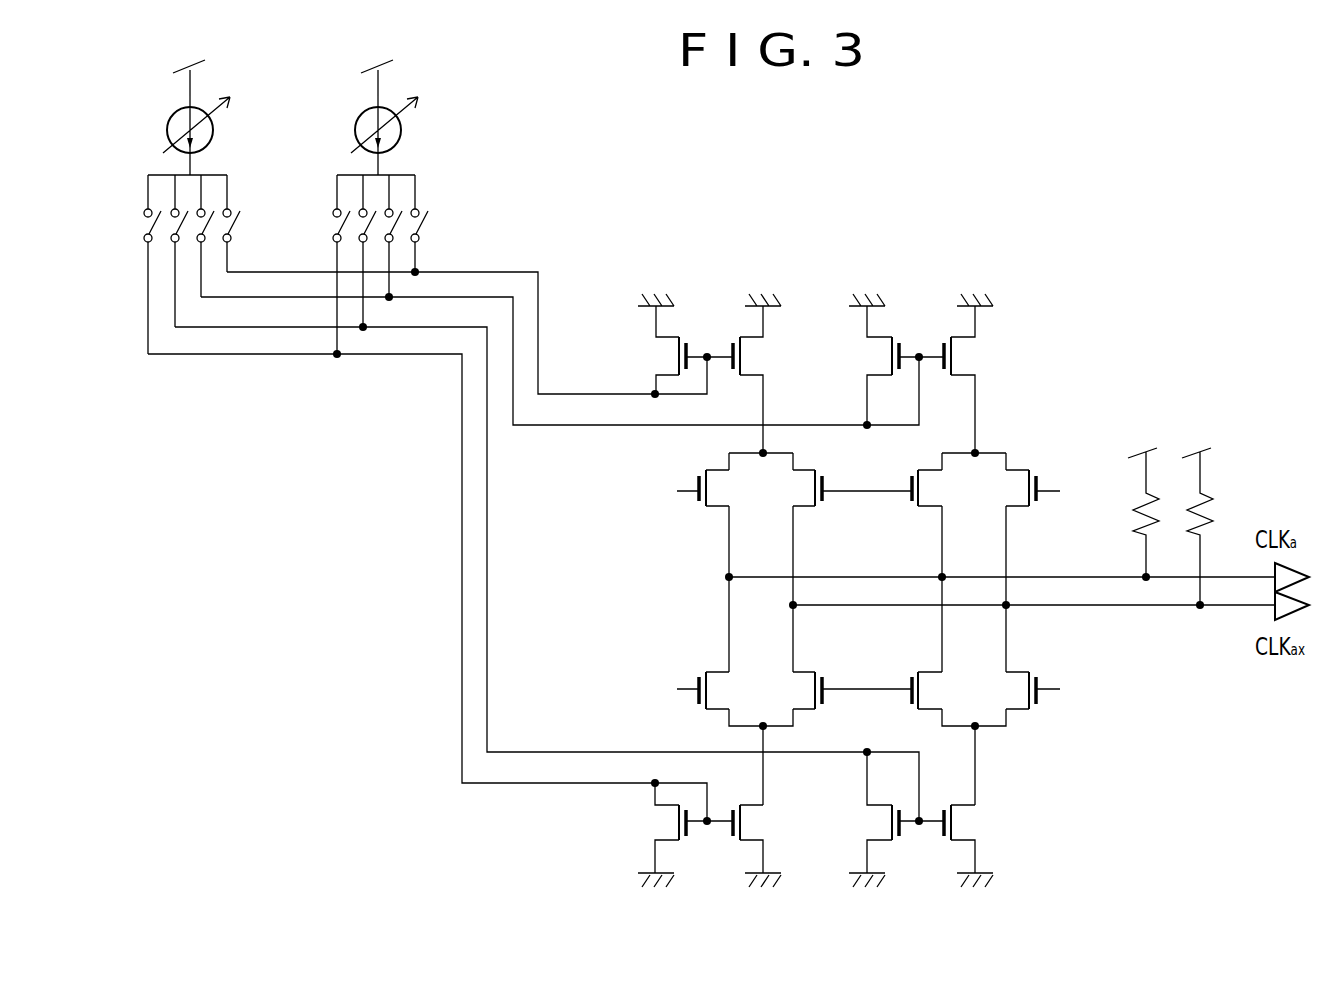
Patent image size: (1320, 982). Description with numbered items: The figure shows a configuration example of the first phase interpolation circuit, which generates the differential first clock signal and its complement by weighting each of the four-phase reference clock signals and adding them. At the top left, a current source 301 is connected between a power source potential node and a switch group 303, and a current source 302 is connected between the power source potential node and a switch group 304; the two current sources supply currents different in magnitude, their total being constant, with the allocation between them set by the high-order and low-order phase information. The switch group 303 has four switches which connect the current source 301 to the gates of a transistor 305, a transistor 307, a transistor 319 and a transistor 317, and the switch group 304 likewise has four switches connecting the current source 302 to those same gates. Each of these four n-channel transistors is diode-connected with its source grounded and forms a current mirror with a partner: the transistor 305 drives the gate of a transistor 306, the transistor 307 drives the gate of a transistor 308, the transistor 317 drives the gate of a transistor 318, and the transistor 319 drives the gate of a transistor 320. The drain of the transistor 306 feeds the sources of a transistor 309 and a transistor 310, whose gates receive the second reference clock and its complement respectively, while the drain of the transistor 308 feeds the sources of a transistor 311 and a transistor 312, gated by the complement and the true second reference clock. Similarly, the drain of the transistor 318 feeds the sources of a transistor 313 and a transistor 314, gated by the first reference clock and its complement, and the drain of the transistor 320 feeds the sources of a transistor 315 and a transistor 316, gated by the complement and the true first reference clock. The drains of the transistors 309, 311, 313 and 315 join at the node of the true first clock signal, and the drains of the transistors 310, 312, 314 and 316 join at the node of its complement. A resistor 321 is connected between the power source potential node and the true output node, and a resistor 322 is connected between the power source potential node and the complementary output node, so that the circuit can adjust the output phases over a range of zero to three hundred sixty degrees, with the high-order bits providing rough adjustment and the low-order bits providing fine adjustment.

The current source 301 is at (401, 128).
The current source 302 is at (213, 128).
The switch group 303 is at (332, 225).
The switch group 304 is at (240, 227).
The n-channel field effect transistor 305 is at (673, 338).
The n-channel field effect transistor 306 is at (738, 338).
The n-channel field effect transistor 307 is at (889, 360).
The n-channel field effect transistor 308 is at (965, 356).
The n-channel field effect transistor 309 is at (717, 507).
The n-channel field effect transistor 310 is at (810, 507).
The n-channel field effect transistor 311 is at (930, 507).
The n-channel field effect transistor 312 is at (1023, 507).
The n-channel field effect transistor 313 is at (720, 670).
The n-channel field effect transistor 314 is at (808, 670).
The n-channel field effect transistor 315 is at (930, 670).
The n-channel field effect transistor 316 is at (1013, 670).
The n-channel field effect transistor 317 is at (658, 828).
The n-channel field effect transistor 318 is at (757, 827).
The n-channel field effect transistor 319 is at (875, 825).
The n-channel field effect transistor 320 is at (970, 827).
The resistor 321 is at (1160, 505).
The resistor 322 is at (1208, 508).